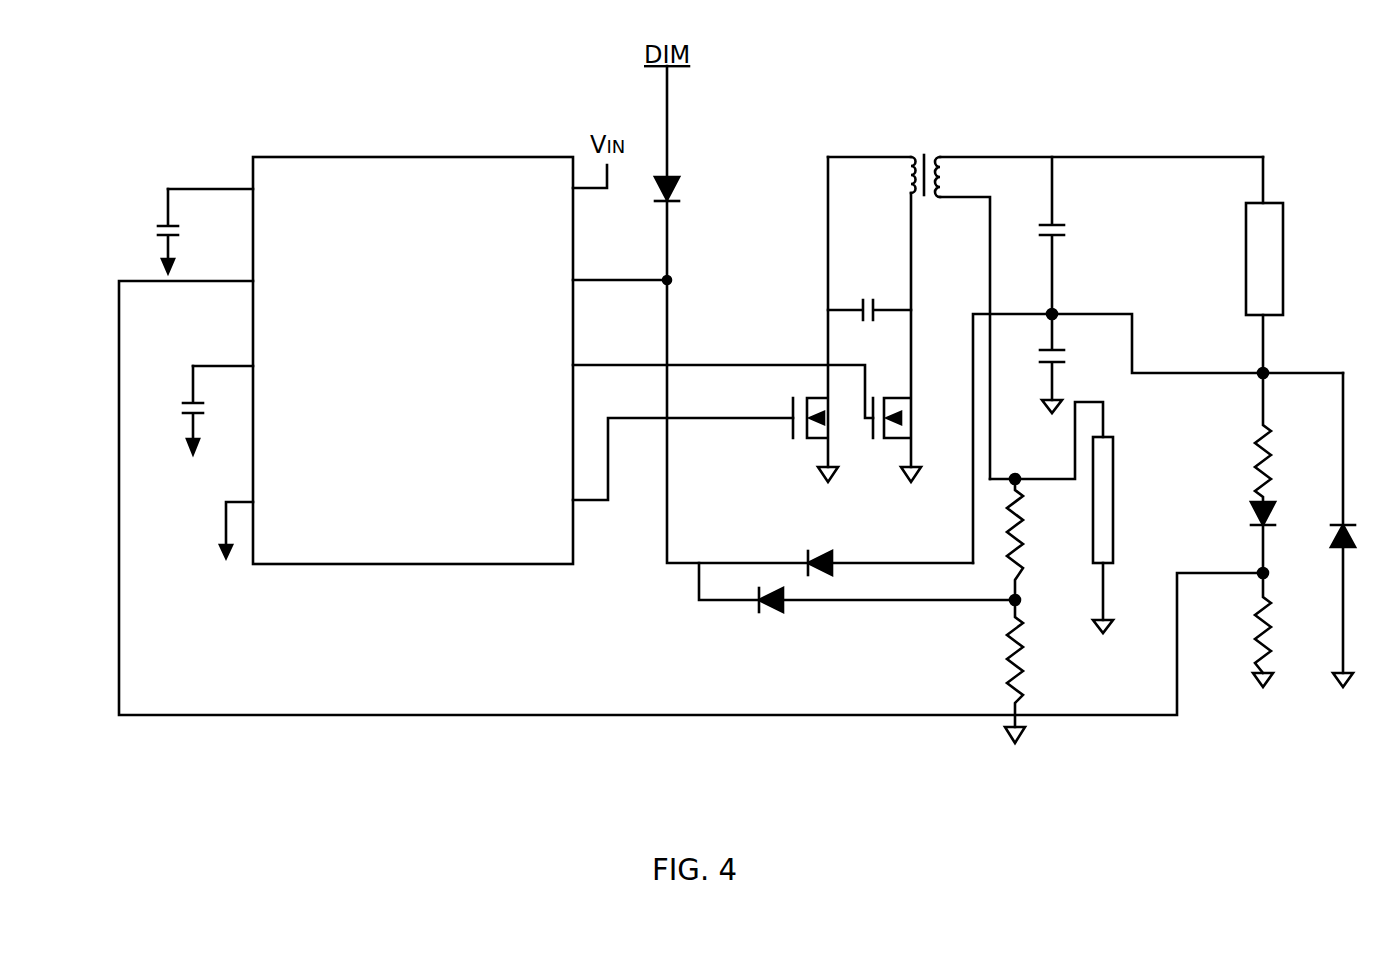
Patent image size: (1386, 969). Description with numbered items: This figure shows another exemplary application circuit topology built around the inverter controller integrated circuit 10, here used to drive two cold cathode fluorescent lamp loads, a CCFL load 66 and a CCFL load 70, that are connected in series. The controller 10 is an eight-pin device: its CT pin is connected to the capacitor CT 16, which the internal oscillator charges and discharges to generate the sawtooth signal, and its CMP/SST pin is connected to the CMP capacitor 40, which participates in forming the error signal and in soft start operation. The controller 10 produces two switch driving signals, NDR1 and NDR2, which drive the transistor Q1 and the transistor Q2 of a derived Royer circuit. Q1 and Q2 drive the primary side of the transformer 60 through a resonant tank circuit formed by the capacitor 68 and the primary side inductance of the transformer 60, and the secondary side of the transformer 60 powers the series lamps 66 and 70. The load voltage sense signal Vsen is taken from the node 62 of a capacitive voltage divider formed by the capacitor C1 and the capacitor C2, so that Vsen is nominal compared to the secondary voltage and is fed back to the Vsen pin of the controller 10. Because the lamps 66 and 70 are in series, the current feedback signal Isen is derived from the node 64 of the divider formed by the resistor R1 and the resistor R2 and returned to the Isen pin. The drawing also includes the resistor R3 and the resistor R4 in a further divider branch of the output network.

The inverter controller integrated circuit 10 is at (343, 157).
The capacitor CT 16 is at (160, 226).
The CMP capacitor 40 is at (189, 403).
The transformer 60 is at (914, 150).
The node between capacitors C1 and C2 62 is at (1056, 312).
The node between resistors R1 and R2 64 is at (1258, 568).
The CCFL load 66 is at (1273, 258).
The capacitor 68 is at (845, 308).
The CCFL load 70 is at (1108, 470).
The transistor Q1 is at (794, 319).
The transistor Q2 is at (763, 337).
The capacitor C1 is at (1072, 235).
The capacitor C2 is at (1072, 363).
The resistor R1 is at (1284, 437).
The resistor R2 is at (1283, 630).
The resistor R3 is at (1033, 537).
The resistor R4 is at (1032, 669).